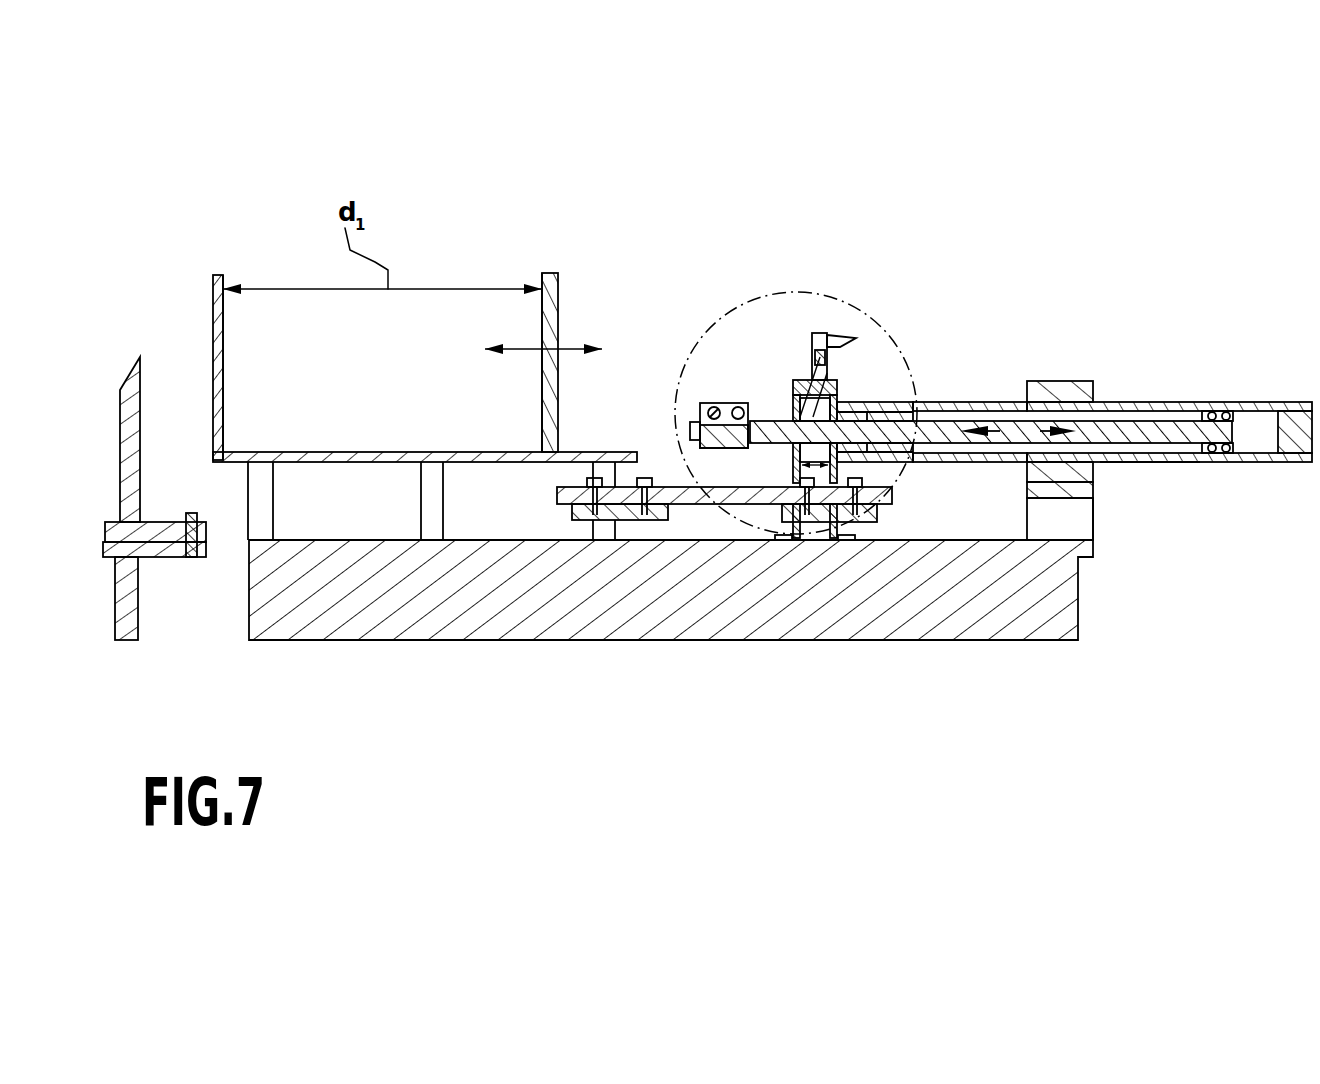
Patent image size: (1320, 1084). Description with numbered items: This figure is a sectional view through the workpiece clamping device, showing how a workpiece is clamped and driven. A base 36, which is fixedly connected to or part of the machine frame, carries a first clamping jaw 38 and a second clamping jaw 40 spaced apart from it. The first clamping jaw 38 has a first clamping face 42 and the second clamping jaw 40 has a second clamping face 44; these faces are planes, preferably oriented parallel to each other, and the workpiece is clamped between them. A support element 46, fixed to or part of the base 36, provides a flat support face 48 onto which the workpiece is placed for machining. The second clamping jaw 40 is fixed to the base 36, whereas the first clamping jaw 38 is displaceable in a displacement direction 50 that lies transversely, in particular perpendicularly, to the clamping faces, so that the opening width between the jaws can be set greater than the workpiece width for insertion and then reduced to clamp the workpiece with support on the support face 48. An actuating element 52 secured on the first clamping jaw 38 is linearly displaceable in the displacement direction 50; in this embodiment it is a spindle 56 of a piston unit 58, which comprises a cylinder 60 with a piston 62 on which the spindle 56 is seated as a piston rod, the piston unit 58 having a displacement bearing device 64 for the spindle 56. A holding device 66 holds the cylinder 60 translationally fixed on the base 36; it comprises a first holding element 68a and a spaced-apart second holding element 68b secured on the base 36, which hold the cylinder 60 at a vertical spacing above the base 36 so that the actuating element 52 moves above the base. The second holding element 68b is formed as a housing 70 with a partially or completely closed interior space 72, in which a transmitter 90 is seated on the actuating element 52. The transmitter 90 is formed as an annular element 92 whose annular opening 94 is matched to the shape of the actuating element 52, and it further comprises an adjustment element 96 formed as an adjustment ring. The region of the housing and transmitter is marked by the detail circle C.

The base 36 is at (671, 627).
The first clamping jaw 38 is at (591, 358).
The second clamping jaw 40 is at (172, 352).
The first clamping face 42 is at (494, 362).
The second clamping face 44 is at (268, 367).
The support element 46 is at (431, 588).
The support face 48 is at (425, 416).
The displacement direction 50 is at (780, 382).
The actuating element 52 is at (970, 395).
The spindle 56 is at (1169, 395).
The piston unit 58 is at (1165, 501).
The cylinder 60 is at (1276, 391).
The piston 62 is at (1252, 475).
The displacement bearing device 64 is at (902, 375).
The holding device 66 is at (1148, 543).
The first holding element 68a is at (1063, 419).
The second holding element 68b is at (970, 338).
The housing 70 is at (724, 586).
The interior space 72 is at (813, 345).
The transmitter 90 is at (811, 353).
The annular element 92 is at (847, 596).
The annular opening 94 is at (742, 559).
The adjustment element 96 is at (846, 313).
The detail region C is at (839, 413).